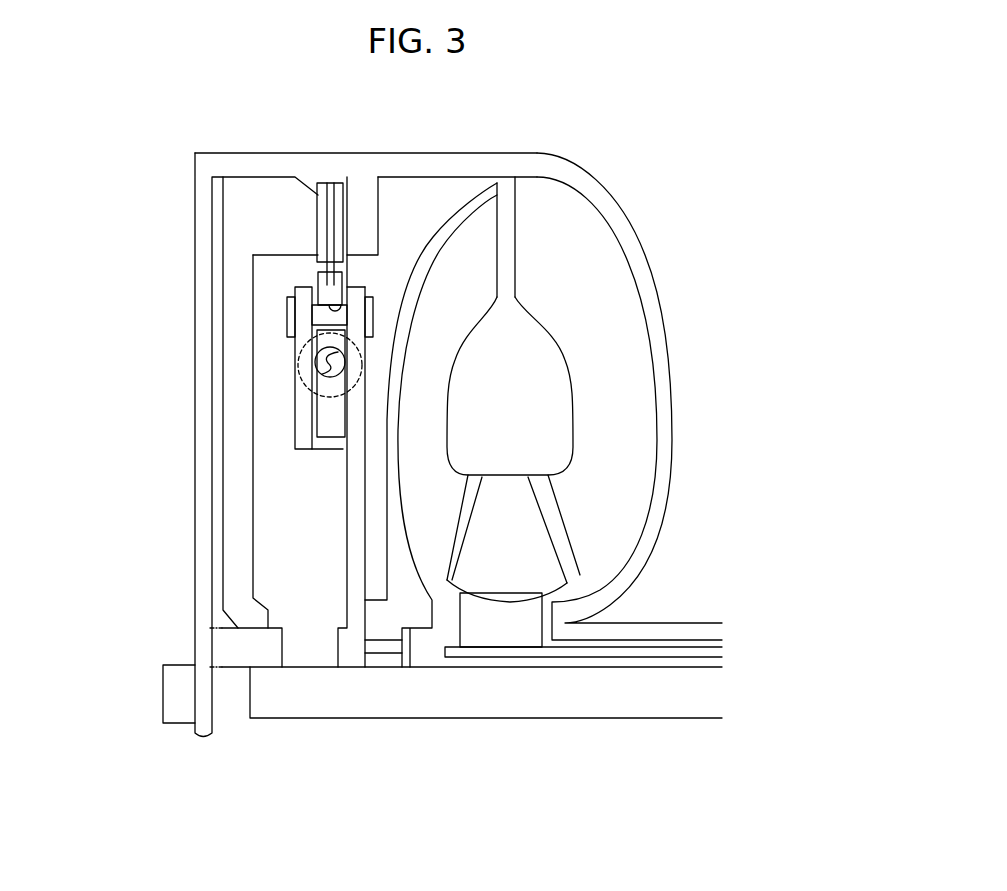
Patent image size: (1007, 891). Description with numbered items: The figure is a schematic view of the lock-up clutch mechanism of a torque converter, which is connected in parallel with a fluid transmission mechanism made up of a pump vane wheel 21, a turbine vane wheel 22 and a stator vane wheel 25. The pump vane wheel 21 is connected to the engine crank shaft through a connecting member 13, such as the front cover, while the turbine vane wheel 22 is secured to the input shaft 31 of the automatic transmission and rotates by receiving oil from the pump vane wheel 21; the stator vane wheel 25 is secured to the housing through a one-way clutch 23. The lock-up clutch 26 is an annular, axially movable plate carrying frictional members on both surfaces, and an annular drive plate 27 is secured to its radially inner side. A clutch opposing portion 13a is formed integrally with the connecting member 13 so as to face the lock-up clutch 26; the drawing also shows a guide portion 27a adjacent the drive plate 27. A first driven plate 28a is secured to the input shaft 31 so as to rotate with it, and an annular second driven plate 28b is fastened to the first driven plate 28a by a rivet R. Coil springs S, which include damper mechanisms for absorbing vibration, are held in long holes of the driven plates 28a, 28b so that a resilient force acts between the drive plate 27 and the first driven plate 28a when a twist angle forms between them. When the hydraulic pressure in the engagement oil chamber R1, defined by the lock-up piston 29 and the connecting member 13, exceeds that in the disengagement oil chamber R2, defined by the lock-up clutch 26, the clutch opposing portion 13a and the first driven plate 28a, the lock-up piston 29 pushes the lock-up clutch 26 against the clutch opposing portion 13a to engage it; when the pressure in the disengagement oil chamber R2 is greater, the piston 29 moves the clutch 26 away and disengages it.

The connecting member 13 is at (200, 306).
The clutch opposing portion 13a is at (372, 217).
The pump vane wheel 21 is at (593, 228).
The turbine vane wheel 22 is at (492, 213).
The one-way clutch 23 is at (510, 637).
The stator vane wheel 25 is at (504, 480).
The lock-up clutch 26 is at (342, 203).
The drive plate 27 is at (323, 290).
The guide block 27a is at (352, 298).
The first driven plate 28a is at (353, 513).
The second driven plate 28b is at (297, 410).
The lock-up piston 29 is at (233, 246).
The input shaft 31 is at (589, 706).
The rivet R is at (316, 318).
The coil springs S is at (318, 372).
The engagement oil chamber R1 is at (213, 483).
The disengagement oil chamber R2 is at (414, 210).